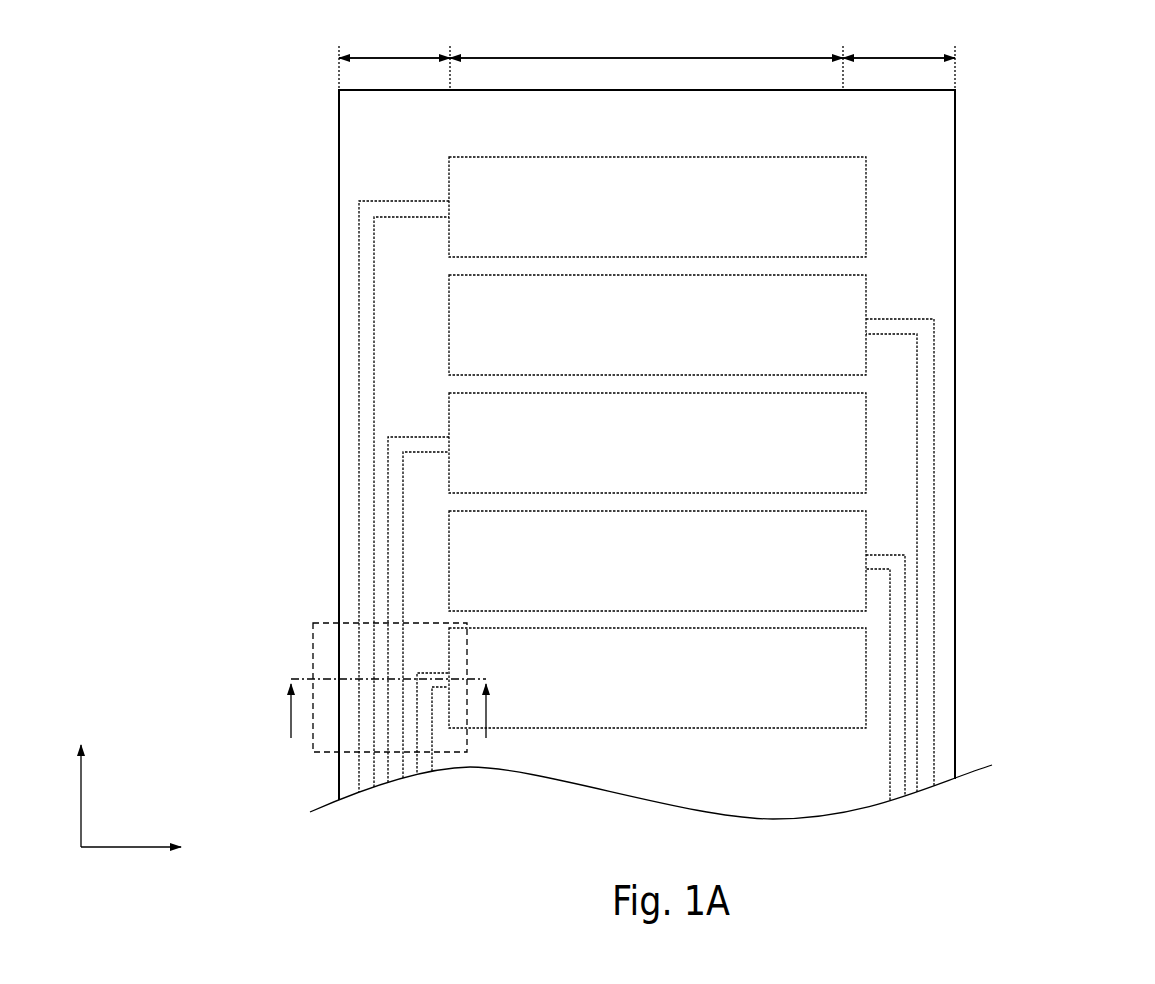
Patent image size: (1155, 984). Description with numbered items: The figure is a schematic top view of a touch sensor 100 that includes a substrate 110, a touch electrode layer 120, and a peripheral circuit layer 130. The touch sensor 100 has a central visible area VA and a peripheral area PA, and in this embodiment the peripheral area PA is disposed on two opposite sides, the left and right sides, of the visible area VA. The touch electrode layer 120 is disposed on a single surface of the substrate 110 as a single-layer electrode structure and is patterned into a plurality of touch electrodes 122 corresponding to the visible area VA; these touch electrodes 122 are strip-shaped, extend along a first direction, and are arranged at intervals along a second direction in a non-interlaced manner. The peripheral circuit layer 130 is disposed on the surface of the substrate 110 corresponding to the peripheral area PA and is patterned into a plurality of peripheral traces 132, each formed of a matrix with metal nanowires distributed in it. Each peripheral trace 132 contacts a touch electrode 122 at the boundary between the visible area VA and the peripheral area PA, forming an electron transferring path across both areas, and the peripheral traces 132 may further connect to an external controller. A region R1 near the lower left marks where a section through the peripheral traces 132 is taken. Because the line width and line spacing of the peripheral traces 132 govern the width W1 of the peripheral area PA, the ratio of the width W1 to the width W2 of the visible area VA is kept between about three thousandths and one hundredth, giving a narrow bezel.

The touch sensor 100 is at (55, 49).
The substrate 110 is at (955, 192).
The touch electrode layer 120 is at (772, 442).
The touch electrodes 122 is at (856, 237).
The peripheral circuit layer 130 is at (573, 500).
The peripheral traces 132 is at (363, 332).
The region R1 is at (320, 753).
The peripheral area PA is at (647, 41).
The visible area VA is at (646, 41).
The width of the peripheral area W1 is at (426, 55).
The width of the visible area W2 is at (768, 55).